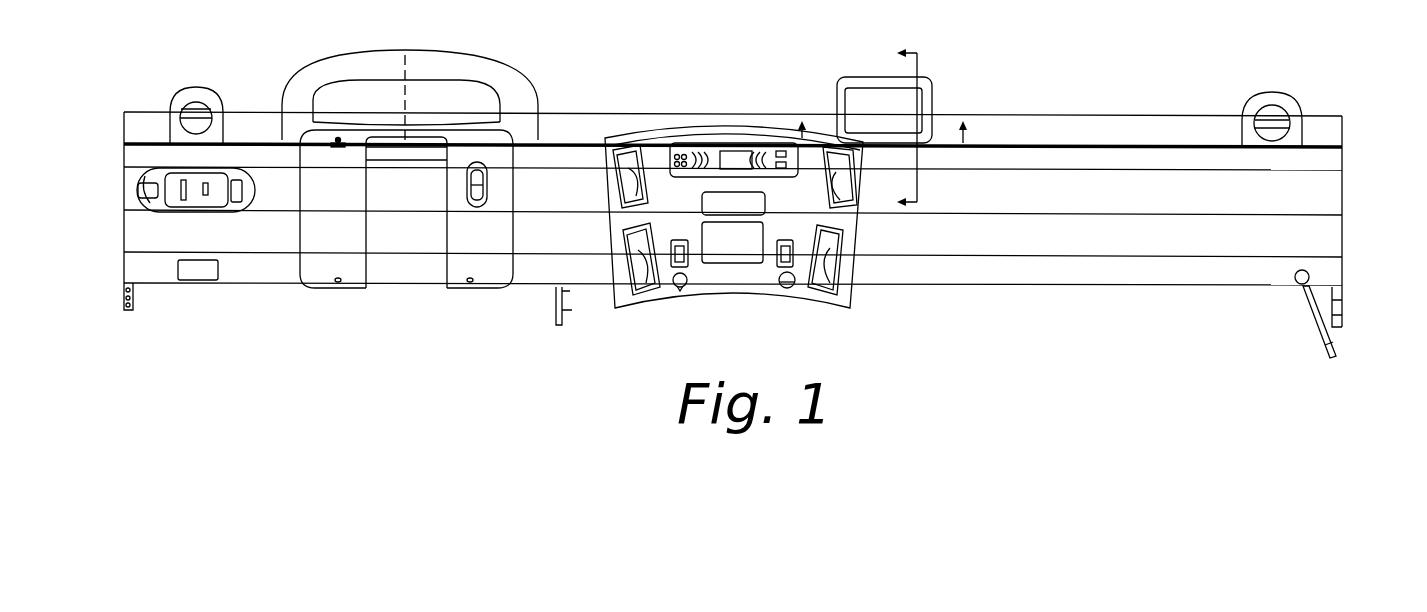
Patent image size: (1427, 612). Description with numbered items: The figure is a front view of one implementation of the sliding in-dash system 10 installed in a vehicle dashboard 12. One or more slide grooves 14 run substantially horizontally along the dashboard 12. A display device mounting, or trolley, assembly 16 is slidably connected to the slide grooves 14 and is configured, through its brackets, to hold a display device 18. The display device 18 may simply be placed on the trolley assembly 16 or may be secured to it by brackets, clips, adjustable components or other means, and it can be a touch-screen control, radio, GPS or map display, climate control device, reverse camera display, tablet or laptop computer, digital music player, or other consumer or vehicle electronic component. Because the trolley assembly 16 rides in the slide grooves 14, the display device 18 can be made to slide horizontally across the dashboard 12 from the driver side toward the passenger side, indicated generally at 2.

The passenger side 2 is at (1370, 74).
The sliding in-dash system 10 is at (1133, 64).
The vehicle dashboard 12 is at (1032, 113).
The slide grooves 14 is at (1343, 144).
The display device mounting assembly 16 is at (876, 77).
The display device 18 is at (855, 93).